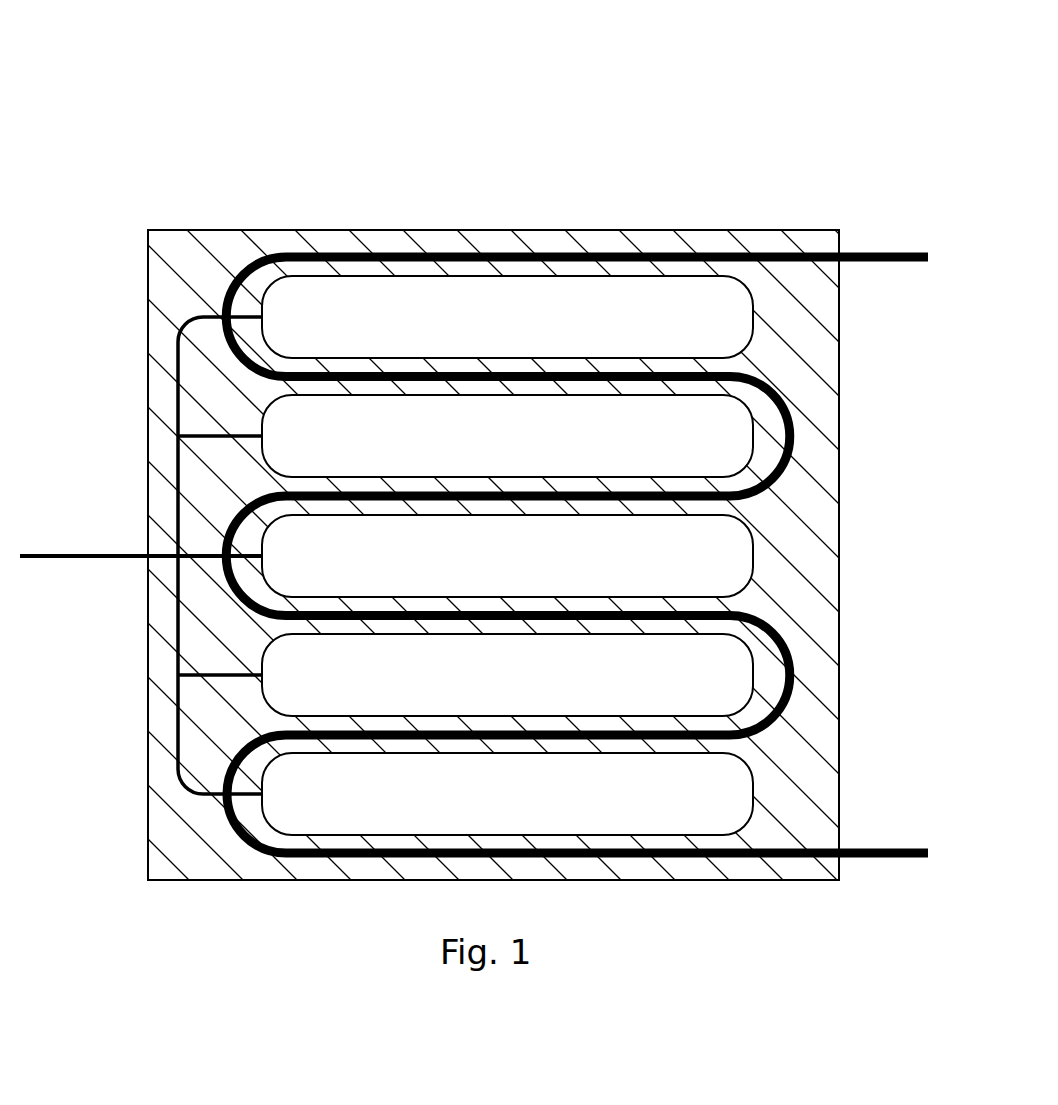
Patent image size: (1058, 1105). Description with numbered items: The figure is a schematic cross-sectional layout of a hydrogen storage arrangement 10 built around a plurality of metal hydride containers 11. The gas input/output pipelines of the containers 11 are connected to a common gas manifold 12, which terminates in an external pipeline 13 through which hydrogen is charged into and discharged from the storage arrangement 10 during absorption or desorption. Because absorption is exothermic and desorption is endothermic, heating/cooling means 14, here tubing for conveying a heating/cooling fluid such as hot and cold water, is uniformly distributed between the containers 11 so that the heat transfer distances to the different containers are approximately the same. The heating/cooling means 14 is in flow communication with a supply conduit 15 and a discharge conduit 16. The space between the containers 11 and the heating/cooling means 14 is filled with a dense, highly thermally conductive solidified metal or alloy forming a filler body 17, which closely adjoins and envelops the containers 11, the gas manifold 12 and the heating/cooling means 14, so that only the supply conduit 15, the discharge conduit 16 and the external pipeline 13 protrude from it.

The hydrogen storage arrangement 10 is at (184, 156).
The metal hydride containers 11 is at (612, 328).
The gas manifold 12 is at (178, 398).
The external pipeline 13 is at (67, 556).
The heating/cooling means 14 is at (228, 822).
The supply conduit 15 is at (892, 263).
The discharge conduit 16 is at (890, 848).
The filler body 17 is at (185, 850).